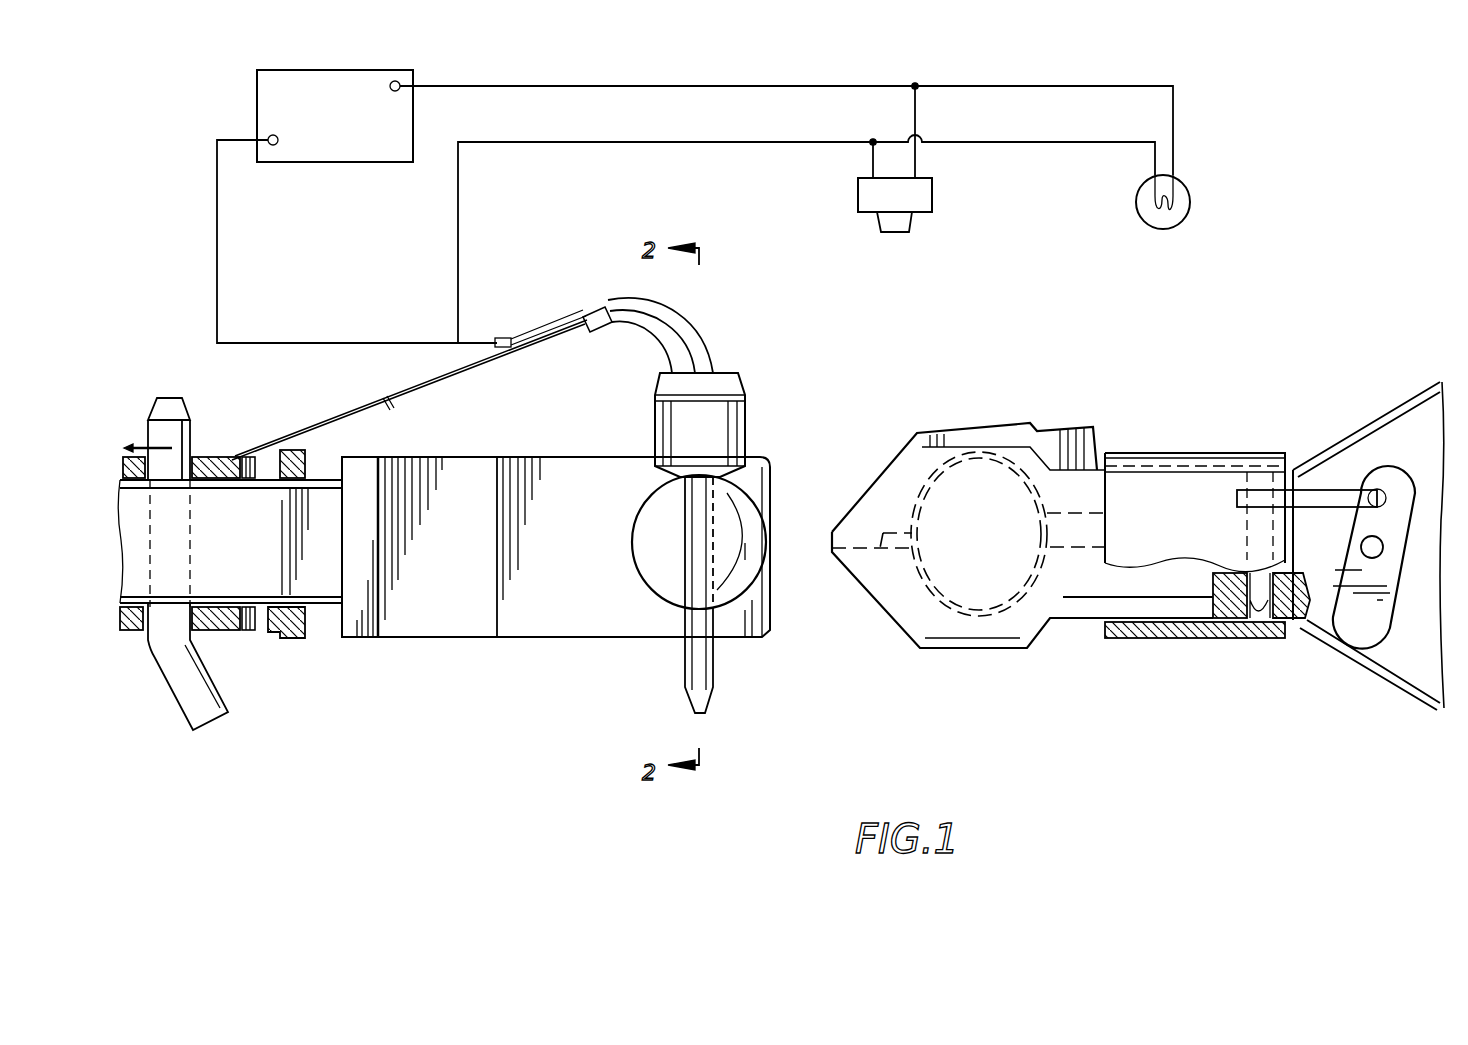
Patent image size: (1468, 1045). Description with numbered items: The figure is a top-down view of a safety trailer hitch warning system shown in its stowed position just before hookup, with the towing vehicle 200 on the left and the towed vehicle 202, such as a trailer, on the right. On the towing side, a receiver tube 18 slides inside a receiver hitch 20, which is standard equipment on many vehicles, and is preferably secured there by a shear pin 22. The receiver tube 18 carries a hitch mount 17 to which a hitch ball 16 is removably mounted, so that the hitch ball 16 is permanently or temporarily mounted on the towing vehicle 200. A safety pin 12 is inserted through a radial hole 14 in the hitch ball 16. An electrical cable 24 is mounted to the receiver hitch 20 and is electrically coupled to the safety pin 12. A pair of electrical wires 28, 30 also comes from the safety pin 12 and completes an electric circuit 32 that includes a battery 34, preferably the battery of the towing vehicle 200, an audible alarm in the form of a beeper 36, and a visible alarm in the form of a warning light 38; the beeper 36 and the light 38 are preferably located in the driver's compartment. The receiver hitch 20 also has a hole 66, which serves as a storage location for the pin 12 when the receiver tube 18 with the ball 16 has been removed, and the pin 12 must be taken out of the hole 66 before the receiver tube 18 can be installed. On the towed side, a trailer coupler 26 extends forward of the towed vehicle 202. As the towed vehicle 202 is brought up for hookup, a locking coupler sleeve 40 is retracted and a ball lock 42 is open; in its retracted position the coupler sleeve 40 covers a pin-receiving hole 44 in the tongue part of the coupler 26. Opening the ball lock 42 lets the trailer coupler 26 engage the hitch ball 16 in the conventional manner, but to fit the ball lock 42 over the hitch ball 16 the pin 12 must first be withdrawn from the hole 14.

The safety pin 12 is at (781, 397).
The radial hole 14 is at (690, 535).
The hitch ball 16 is at (738, 578).
The hitch mount 17 is at (568, 457).
The receiver tube 18 is at (331, 590).
The receiver hitch 20 is at (222, 456).
The shear pin 22 is at (190, 705).
The electrical cable 24 is at (476, 372).
The trailer coupler 26 is at (1135, 402).
The electrical wire 28 is at (458, 240).
The electrical wire 30 is at (215, 241).
The electric circuit 32 is at (1228, 100).
The battery 34 is at (342, 163).
The beeper 36 is at (923, 192).
The warning light 38 is at (1192, 203).
The locking coupler sleeve 40 is at (1185, 457).
The ball lock 42 is at (1052, 438).
The pin-receiving hole 44 is at (1262, 618).
The hole 66 is at (262, 622).
The towing vehicle 200 is at (469, 680).
The towed vehicle 202 is at (1109, 664).